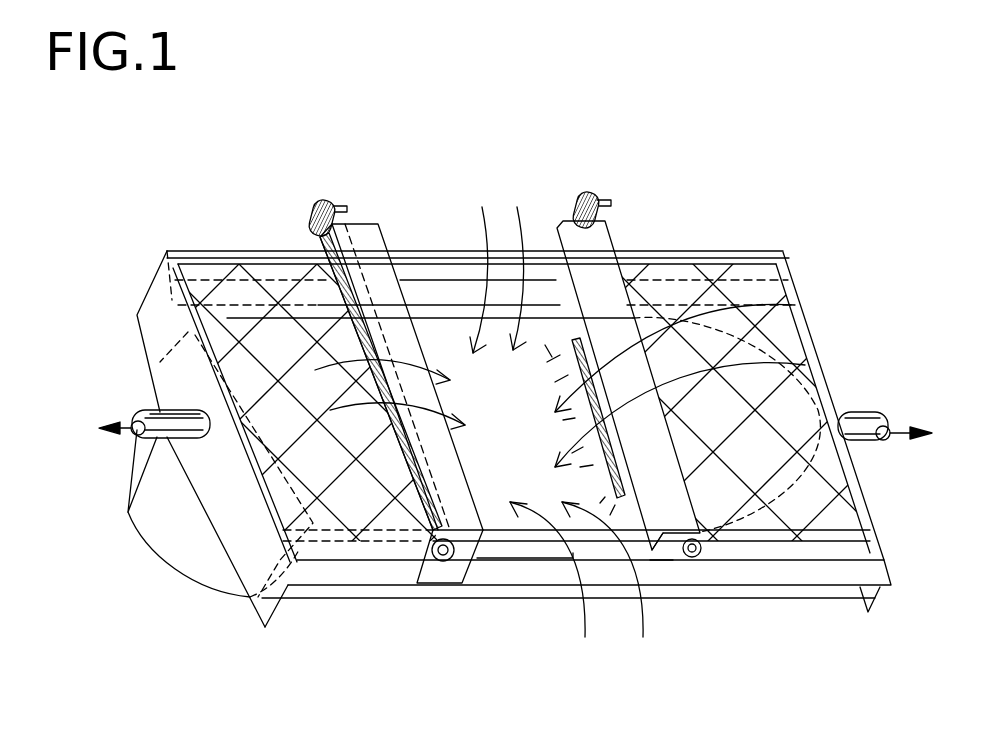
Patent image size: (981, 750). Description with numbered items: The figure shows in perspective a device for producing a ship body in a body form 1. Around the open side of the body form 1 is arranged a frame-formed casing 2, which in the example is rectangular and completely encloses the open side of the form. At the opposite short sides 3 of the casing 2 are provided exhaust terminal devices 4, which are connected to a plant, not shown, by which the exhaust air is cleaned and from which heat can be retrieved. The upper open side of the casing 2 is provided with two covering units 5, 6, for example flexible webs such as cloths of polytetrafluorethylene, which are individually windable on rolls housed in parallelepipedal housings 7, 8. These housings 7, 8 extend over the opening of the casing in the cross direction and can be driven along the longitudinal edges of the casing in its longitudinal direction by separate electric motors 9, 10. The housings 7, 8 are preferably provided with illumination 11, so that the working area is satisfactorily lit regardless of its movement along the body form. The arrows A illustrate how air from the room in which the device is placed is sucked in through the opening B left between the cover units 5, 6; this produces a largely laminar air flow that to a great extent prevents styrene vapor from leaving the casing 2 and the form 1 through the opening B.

The body form 1 is at (212, 565).
The casing 2 is at (444, 250).
The short sides 3 is at (157, 313).
The exhaust terminal devices 4 is at (128, 512).
The covering unit 5 is at (278, 350).
The covering unit 6 is at (750, 462).
The housing 7 is at (365, 248).
The housing 8 is at (566, 215).
The electric motor 9 is at (318, 228).
The electric motor 10 is at (568, 208).
The illumination 11 is at (575, 340).
The arrows A is at (640, 607).
The opening B is at (498, 412).